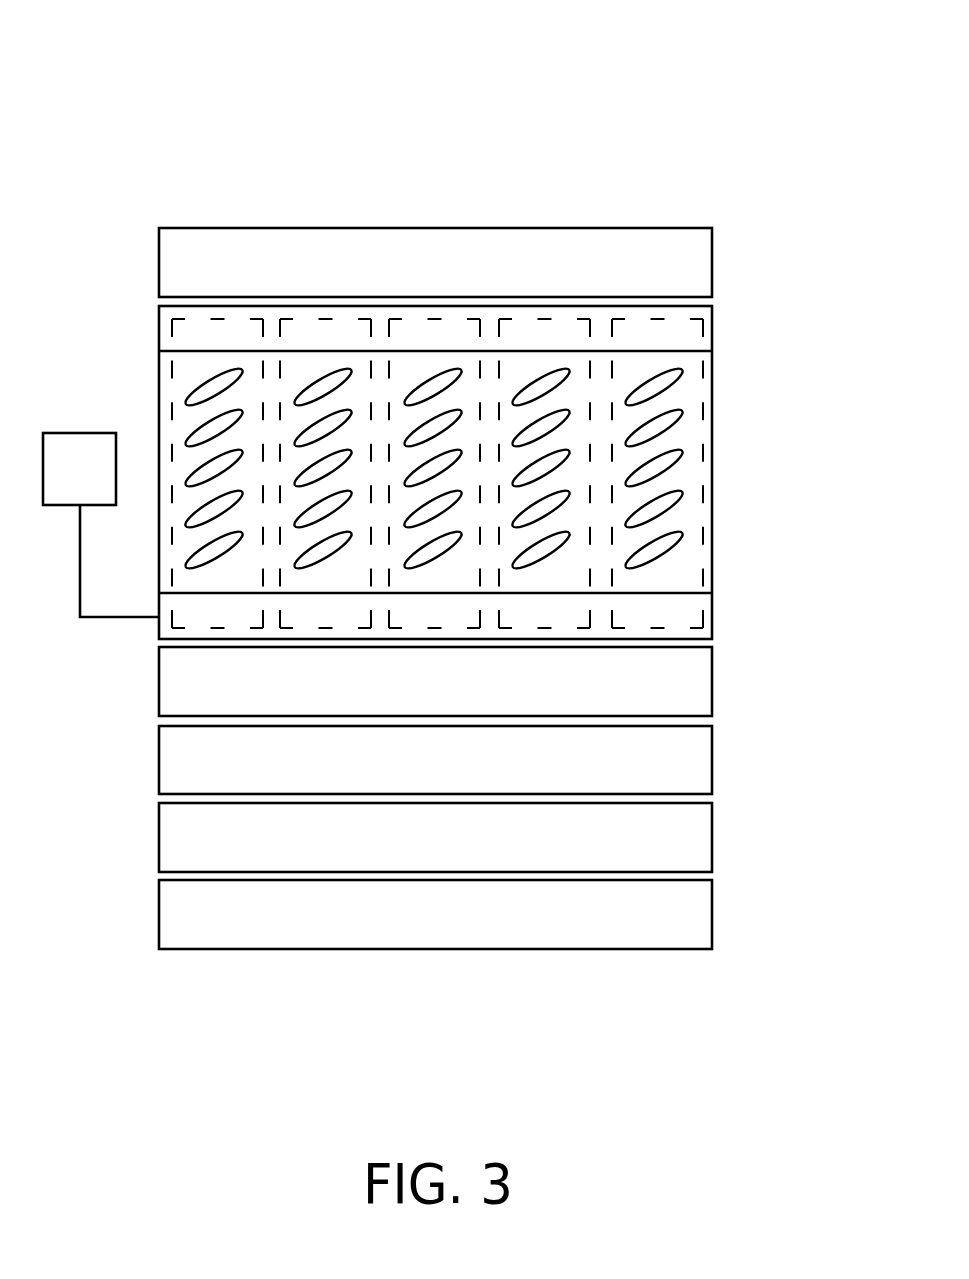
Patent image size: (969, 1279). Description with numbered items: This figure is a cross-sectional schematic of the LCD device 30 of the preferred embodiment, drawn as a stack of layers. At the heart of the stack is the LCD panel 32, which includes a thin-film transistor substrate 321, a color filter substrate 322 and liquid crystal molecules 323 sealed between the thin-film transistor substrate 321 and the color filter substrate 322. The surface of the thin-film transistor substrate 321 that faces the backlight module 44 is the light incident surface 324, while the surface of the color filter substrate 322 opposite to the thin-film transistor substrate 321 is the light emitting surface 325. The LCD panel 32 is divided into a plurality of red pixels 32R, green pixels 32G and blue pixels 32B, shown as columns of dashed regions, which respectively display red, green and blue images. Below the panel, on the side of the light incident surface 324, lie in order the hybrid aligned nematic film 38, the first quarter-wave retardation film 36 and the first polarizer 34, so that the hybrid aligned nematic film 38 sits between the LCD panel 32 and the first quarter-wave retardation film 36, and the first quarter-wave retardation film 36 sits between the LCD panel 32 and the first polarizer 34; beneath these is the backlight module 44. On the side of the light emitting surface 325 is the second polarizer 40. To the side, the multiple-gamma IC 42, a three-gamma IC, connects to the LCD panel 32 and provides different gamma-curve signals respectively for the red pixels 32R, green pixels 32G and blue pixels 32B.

The LCD device 30 is at (742, 66).
The second polarizer 40 is at (692, 271).
The light emitting surface 325 is at (185, 305).
The LCD panel 32 is at (787, 305).
The color filter substrate 322 is at (677, 336).
The liquid crystal molecules 323 is at (665, 458).
The thin-film transistor substrate 321 is at (677, 618).
The red pixels 32R is at (220, 319).
The green pixels 32G is at (323, 319).
The blue pixels 32B is at (440, 319).
The light incident surface 324 is at (202, 640).
The multiple-gamma IC 42 is at (62, 483).
The hybrid aligned nematic film 38 is at (409, 696).
The first quarter-wave retardation film 36 is at (409, 772).
The first polarizer 34 is at (409, 849).
The backlight module 44 is at (409, 927).